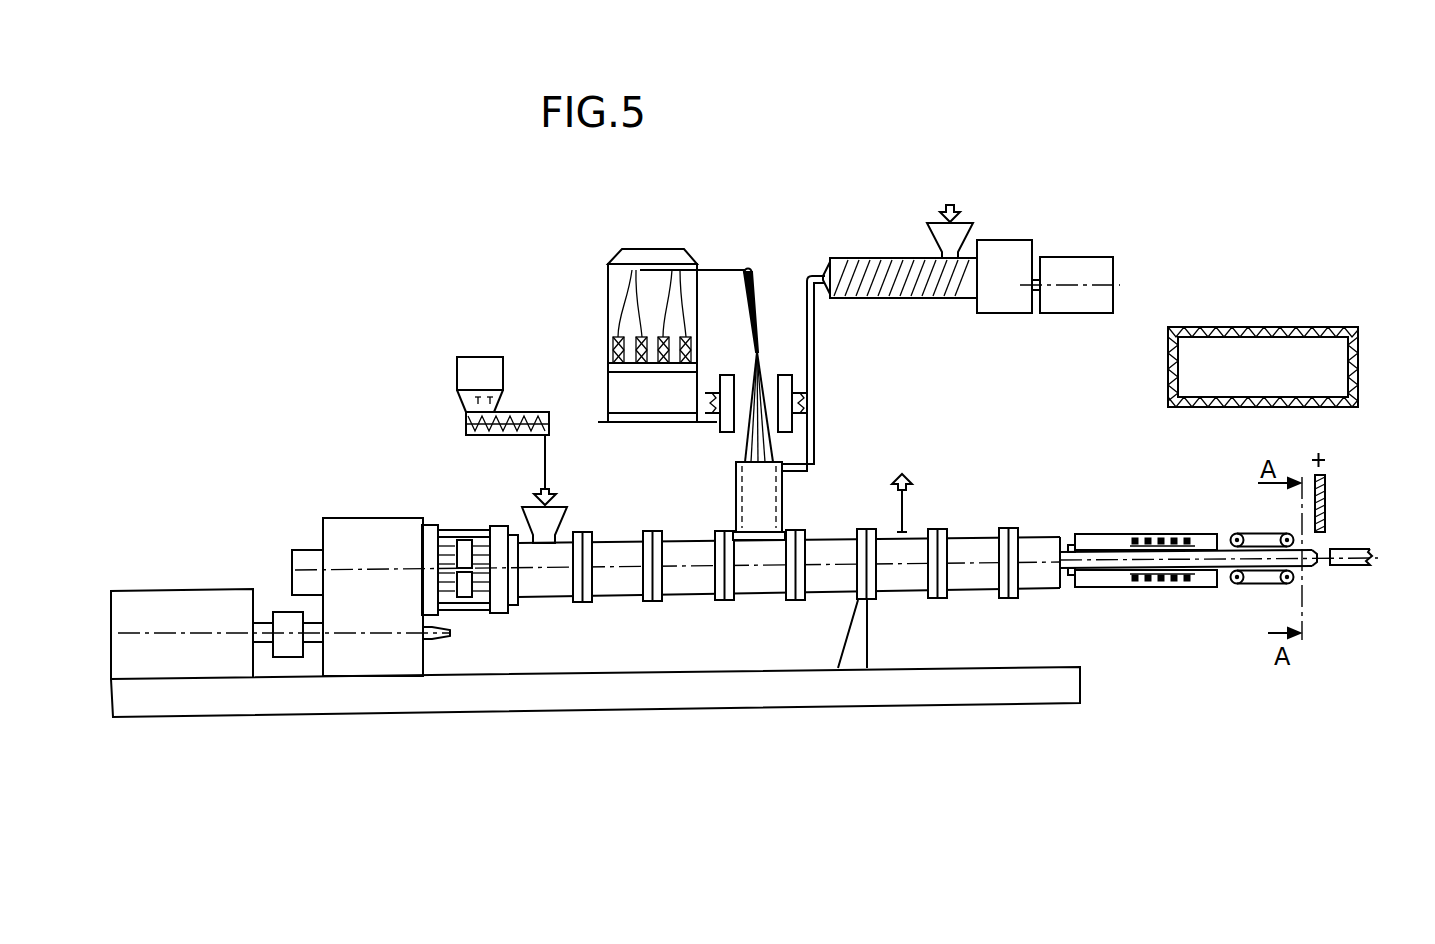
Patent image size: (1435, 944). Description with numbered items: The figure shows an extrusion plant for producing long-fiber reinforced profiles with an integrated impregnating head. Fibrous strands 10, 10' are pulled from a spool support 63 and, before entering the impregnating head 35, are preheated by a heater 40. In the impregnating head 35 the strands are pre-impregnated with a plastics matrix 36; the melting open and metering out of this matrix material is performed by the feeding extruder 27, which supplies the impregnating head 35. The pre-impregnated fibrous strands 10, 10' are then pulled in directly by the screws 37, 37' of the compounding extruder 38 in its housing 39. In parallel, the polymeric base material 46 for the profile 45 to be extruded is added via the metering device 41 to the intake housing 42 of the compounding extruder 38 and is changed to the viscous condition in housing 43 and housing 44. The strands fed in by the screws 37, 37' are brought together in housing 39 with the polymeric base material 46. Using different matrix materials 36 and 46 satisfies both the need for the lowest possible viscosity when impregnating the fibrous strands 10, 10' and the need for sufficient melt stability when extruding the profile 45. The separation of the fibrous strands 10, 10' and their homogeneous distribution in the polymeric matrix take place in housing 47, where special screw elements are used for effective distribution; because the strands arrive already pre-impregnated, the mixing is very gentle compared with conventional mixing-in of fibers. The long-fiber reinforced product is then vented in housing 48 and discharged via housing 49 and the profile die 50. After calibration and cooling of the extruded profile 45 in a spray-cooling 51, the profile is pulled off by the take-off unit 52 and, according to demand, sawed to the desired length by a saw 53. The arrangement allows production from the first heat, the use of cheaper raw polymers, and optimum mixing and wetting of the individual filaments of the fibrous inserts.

The fibrous strand 10 is at (706, 386).
The fibrous strand 10' is at (706, 386).
The feeding extruder 27 is at (966, 323).
The impregnating head 35 is at (763, 497).
The plastics matrix 36 is at (944, 208).
The screw 37 is at (676, 562).
The screw 37' is at (470, 649).
The compounding extruder 38 is at (373, 740).
The housing 39 is at (769, 580).
The heater 40 is at (795, 383).
The metering device 41 is at (450, 423).
The intake housing 42 is at (543, 585).
The housing 43 is at (613, 584).
The housing 44 is at (690, 583).
The profile 45 is at (1258, 327).
The polymeric base material 46 is at (480, 375).
The housing 47 is at (825, 578).
The housing 48 is at (904, 578).
The housing 49 is at (975, 577).
The profile die 50 is at (1036, 576).
The spray-cooling 51 is at (1170, 578).
The take-off unit 52 is at (1258, 580).
The saw 53 is at (1328, 490).
The spool support 63 is at (614, 290).